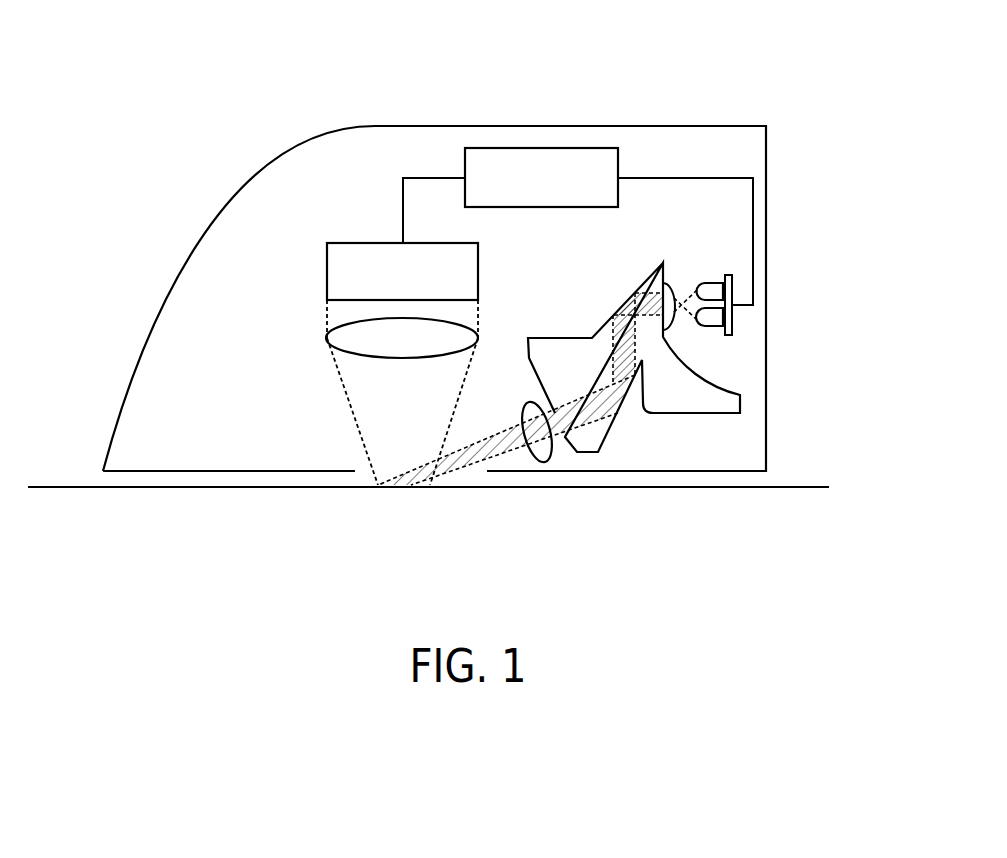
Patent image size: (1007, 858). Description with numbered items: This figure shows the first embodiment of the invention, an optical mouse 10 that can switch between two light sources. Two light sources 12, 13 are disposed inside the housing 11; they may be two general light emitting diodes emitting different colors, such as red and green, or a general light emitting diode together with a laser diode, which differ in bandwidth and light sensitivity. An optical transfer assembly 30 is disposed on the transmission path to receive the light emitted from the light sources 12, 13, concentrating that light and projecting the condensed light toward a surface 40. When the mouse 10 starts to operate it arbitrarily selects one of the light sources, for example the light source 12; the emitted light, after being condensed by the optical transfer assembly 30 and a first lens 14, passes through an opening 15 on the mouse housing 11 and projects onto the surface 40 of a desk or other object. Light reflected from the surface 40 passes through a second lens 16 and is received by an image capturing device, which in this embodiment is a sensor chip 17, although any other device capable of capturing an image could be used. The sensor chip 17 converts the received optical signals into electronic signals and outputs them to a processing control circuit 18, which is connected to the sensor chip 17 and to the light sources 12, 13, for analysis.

The mouse 10 is at (482, 253).
The housing 11 is at (648, 125).
The light source 12 is at (712, 282).
The light source 13 is at (712, 328).
The first lens 14 is at (524, 410).
The opening 15 is at (371, 473).
The second lens 16 is at (330, 347).
The sensor chip 17 is at (418, 284).
The processing control circuit 18 is at (556, 190).
The optical transfer assembly 30 is at (578, 316).
The surface 40 is at (753, 489).